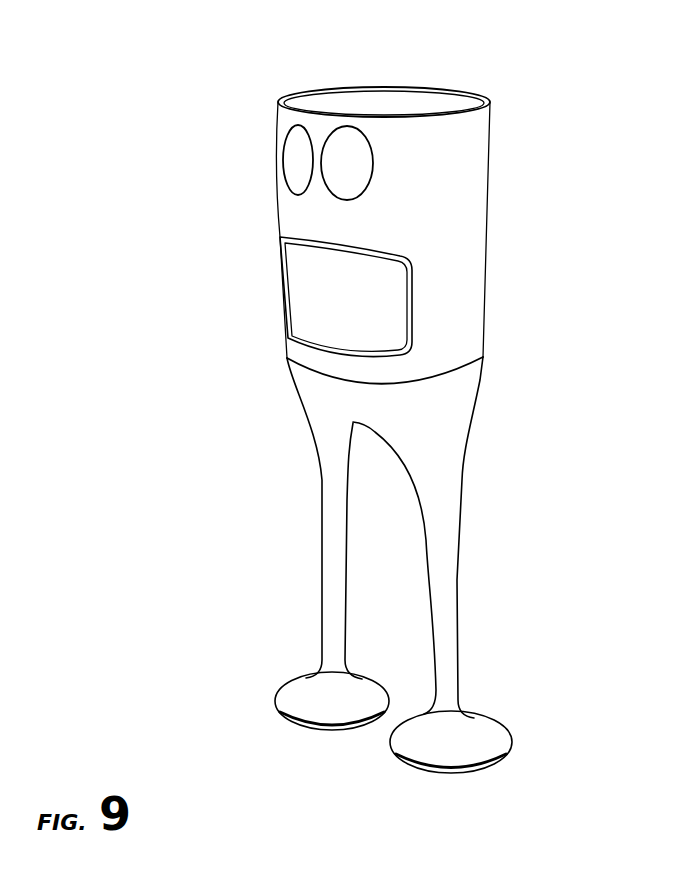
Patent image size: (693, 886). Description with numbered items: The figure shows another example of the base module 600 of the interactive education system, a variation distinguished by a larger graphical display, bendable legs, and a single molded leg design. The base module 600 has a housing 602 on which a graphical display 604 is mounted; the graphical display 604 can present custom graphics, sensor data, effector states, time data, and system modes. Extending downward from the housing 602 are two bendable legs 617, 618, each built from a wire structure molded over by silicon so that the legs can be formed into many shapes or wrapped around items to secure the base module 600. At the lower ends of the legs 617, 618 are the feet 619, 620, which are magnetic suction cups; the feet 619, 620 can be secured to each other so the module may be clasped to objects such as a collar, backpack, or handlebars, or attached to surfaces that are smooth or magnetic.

The base module 600 is at (505, 90).
The housing 602 is at (493, 200).
The graphical display 604 is at (307, 293).
The bendable leg 617 is at (335, 515).
The bendable leg 618 is at (450, 558).
The foot 619 is at (507, 737).
The foot 620 is at (293, 680).